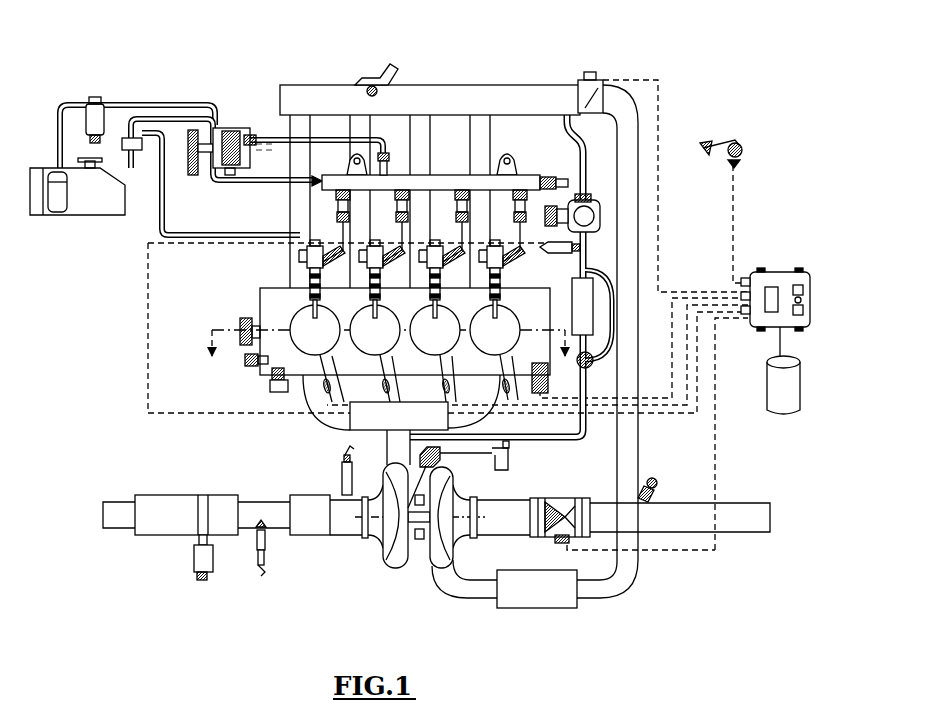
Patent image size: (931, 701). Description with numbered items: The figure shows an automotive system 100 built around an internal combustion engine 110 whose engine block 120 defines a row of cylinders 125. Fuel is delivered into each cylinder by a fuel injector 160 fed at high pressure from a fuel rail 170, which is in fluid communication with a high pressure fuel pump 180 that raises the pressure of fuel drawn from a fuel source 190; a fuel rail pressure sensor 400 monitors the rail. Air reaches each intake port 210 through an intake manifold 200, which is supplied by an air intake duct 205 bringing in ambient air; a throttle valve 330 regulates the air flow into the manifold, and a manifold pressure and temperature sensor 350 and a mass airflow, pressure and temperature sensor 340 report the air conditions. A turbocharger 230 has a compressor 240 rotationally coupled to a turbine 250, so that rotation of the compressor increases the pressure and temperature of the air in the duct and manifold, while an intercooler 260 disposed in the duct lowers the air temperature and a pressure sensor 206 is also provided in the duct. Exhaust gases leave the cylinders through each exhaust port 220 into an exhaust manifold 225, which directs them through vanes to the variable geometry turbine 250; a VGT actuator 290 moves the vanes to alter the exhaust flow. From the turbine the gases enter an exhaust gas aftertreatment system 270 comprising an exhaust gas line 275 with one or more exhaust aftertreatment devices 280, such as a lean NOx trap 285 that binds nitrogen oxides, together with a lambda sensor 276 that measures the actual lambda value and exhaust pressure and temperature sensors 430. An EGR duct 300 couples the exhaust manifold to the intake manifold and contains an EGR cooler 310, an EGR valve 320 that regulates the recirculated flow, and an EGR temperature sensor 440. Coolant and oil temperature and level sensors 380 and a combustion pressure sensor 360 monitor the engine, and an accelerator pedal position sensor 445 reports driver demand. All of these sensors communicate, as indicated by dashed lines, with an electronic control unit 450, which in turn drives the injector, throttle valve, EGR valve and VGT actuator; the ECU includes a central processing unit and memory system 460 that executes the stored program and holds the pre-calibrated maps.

The automotive system 100 is at (203, 75).
The internal combustion engine 110 is at (506, 74).
The engine block 120 is at (260, 290).
The cylinder 125 is at (510, 312).
The fuel injector 160 is at (318, 275).
The fuel rail 170 is at (318, 186).
The high pressure fuel pump 180 is at (236, 122).
The fuel source 190 is at (100, 200).
The intake manifold 200 is at (422, 100).
The air intake duct 205 is at (748, 503).
The pressure sensor 206 is at (647, 493).
The intake port 210 is at (302, 290).
The exhaust port 220 is at (305, 380).
The exhaust manifold 225 is at (418, 455).
The turbocharger 230 is at (389, 576).
The compressor 240 is at (447, 542).
The variable geometry turbine 250 is at (434, 543).
The intercooler 260 is at (558, 595).
The exhaust gas aftertreatment system 270 is at (172, 485).
The exhaust gas line 275 is at (108, 516).
The lambda sensor 276 is at (340, 476).
The exhaust aftertreatment device 280 is at (158, 518).
The lean NOx trap 285 is at (305, 520).
The VGT actuator 290 is at (433, 460).
The EGR duct 300 is at (556, 446).
The EGR cooler 310 is at (583, 318).
The EGR valve 320 is at (590, 196).
The throttle valve 330 is at (590, 72).
The mass airflow, pressure and temperature sensor 340 is at (557, 537).
The manifold pressure and temperature sensor 350 is at (367, 75).
The combustion pressure sensor 360 is at (327, 390).
The coolant and oil temperature and level sensors 380 is at (275, 385).
The fuel rail pressure sensor 400 is at (568, 180).
The exhaust pressure and temperature sensors 430 is at (261, 572).
The EGR temperature sensor 440 is at (586, 242).
The accelerator pedal position sensor 445 is at (740, 134).
The electronic control unit 450 is at (780, 270).
The central processing unit and memory system 460 is at (782, 400).